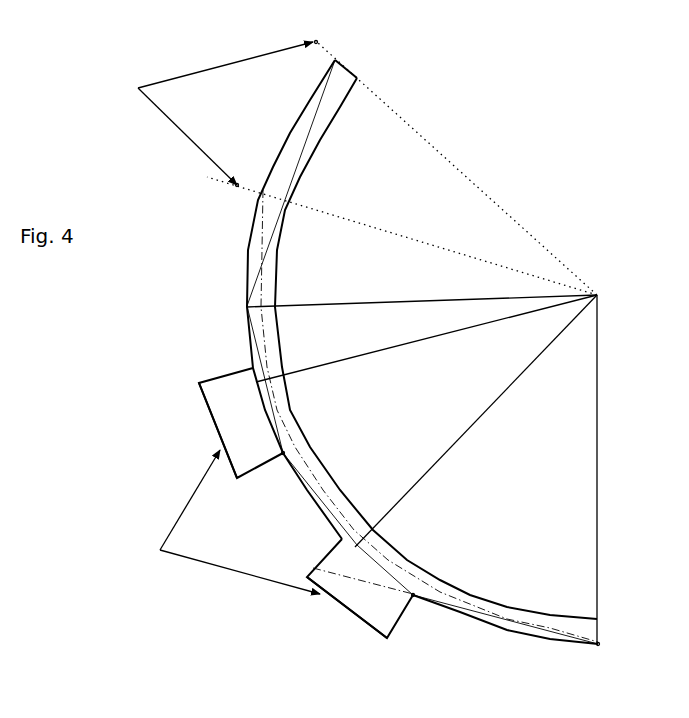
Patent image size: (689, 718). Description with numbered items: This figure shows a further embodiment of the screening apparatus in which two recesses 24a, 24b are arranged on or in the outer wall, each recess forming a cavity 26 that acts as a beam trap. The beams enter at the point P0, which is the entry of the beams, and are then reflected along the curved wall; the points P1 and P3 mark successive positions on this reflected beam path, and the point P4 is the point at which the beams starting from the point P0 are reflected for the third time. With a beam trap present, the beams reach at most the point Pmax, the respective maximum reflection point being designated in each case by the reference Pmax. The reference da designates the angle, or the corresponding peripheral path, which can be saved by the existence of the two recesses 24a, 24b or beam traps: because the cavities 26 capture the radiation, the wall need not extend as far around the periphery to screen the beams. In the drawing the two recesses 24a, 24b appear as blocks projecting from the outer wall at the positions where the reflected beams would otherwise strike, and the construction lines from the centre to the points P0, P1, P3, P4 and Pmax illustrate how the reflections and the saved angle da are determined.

The cavity 26 is at (218, 395).
The recess 24a is at (316, 611).
The recess 24b is at (202, 438).
The maximum reflection point Pmax is at (282, 452).
The point of entry of the beams P0 is at (615, 653).
The point P1 is at (413, 596).
The point P3 is at (226, 198).
The point of third reflection P4 is at (305, 28).
The angular difference da is at (429, 215).